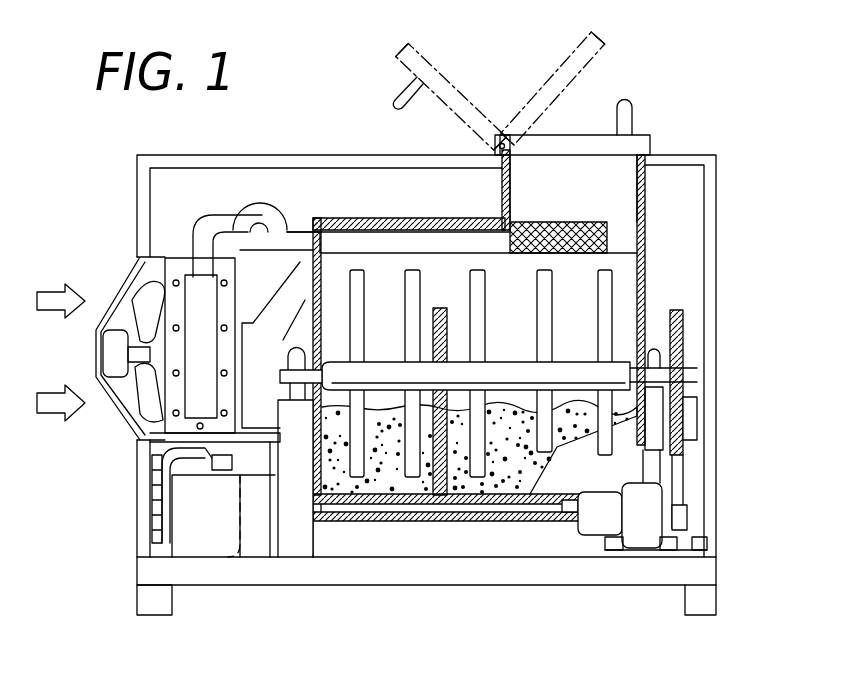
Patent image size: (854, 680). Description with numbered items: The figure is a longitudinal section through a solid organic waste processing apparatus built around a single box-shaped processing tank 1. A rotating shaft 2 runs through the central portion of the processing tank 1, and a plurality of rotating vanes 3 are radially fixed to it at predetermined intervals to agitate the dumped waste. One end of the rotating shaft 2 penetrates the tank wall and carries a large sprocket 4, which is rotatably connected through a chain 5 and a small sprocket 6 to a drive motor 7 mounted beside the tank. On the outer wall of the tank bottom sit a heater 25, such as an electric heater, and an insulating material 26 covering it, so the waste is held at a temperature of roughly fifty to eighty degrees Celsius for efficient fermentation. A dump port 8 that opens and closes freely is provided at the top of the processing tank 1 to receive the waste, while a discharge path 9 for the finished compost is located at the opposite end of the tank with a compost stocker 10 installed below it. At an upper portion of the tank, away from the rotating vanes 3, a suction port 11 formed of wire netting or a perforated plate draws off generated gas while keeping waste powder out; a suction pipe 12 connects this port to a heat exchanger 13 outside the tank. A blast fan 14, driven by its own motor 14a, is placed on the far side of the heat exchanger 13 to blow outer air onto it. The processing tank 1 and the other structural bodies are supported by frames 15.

The processing tank 1 is at (577, 278).
The rotating shaft 2 is at (513, 375).
The rotating vanes 3 is at (415, 290).
The large sprocket 4 is at (678, 335).
The chain 5 is at (690, 447).
The small sprocket 6 is at (678, 507).
The drive motor 7 is at (645, 537).
The dump port 8 is at (578, 143).
The discharge path 9 is at (300, 288).
The compost stocker 10 is at (210, 520).
The suction port 11 is at (580, 222).
The suction pipe 12 is at (463, 240).
The heat exchanger 13 is at (192, 285).
The blast fan 14 is at (145, 300).
The motor 14a is at (110, 393).
The frames 15 is at (378, 573).
The heater 25 is at (455, 505).
The insulating material 26 is at (513, 521).